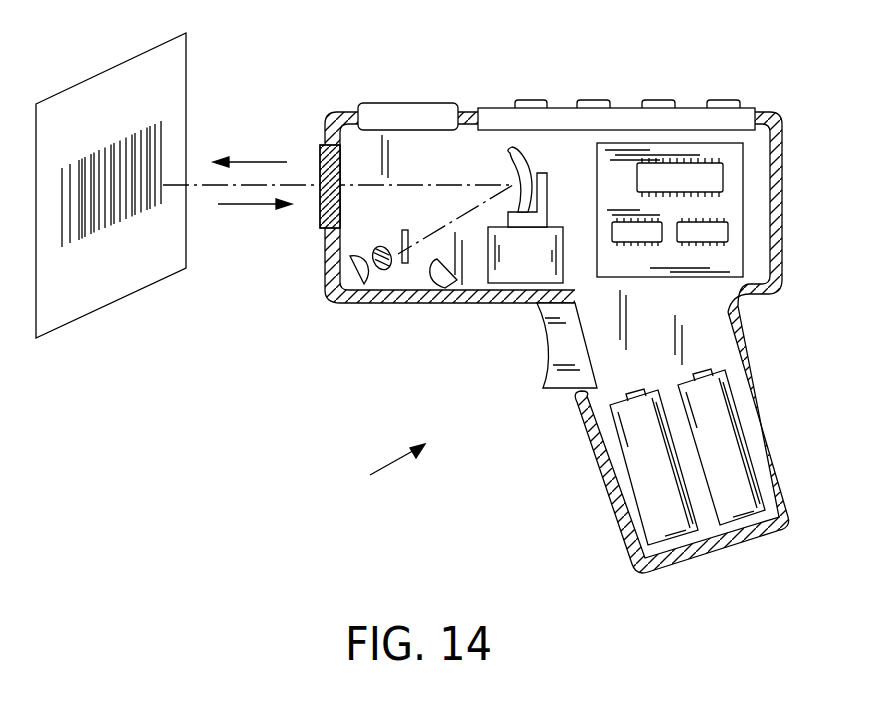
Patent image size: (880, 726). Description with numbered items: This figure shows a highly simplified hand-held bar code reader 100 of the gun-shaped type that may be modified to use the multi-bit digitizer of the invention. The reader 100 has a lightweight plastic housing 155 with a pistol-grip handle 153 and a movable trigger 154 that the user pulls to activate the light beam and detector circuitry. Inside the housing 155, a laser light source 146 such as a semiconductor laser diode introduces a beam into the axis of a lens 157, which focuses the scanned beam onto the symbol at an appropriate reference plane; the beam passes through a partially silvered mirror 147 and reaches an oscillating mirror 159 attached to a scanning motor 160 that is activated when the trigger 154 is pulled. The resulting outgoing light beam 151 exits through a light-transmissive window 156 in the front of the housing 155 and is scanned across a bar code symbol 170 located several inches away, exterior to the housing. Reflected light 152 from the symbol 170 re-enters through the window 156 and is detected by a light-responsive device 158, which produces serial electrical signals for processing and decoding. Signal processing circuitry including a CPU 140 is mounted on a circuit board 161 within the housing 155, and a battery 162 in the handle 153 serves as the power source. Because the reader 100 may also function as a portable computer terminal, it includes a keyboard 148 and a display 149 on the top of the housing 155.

The bar code reader 100 is at (377, 471).
The CPU 140 is at (648, 173).
The laser light source 146 is at (347, 272).
The partially silvered mirror 147 is at (405, 265).
The keyboard 148 is at (693, 115).
The display 149 is at (380, 108).
The outgoing light beam 151 is at (242, 160).
The reflected light 152 is at (257, 207).
The handle 153 is at (605, 483).
The trigger 154 is at (542, 385).
The housing 155 is at (782, 230).
The window 156 is at (322, 152).
The lens 157 is at (382, 270).
The light-responsive device 158 is at (452, 285).
The oscillating mirror 159 is at (523, 177).
The scanning motor 160 is at (533, 277).
The printed circuit board 161 is at (717, 162).
The battery 162 is at (725, 372).
The symbols 170 is at (128, 135).